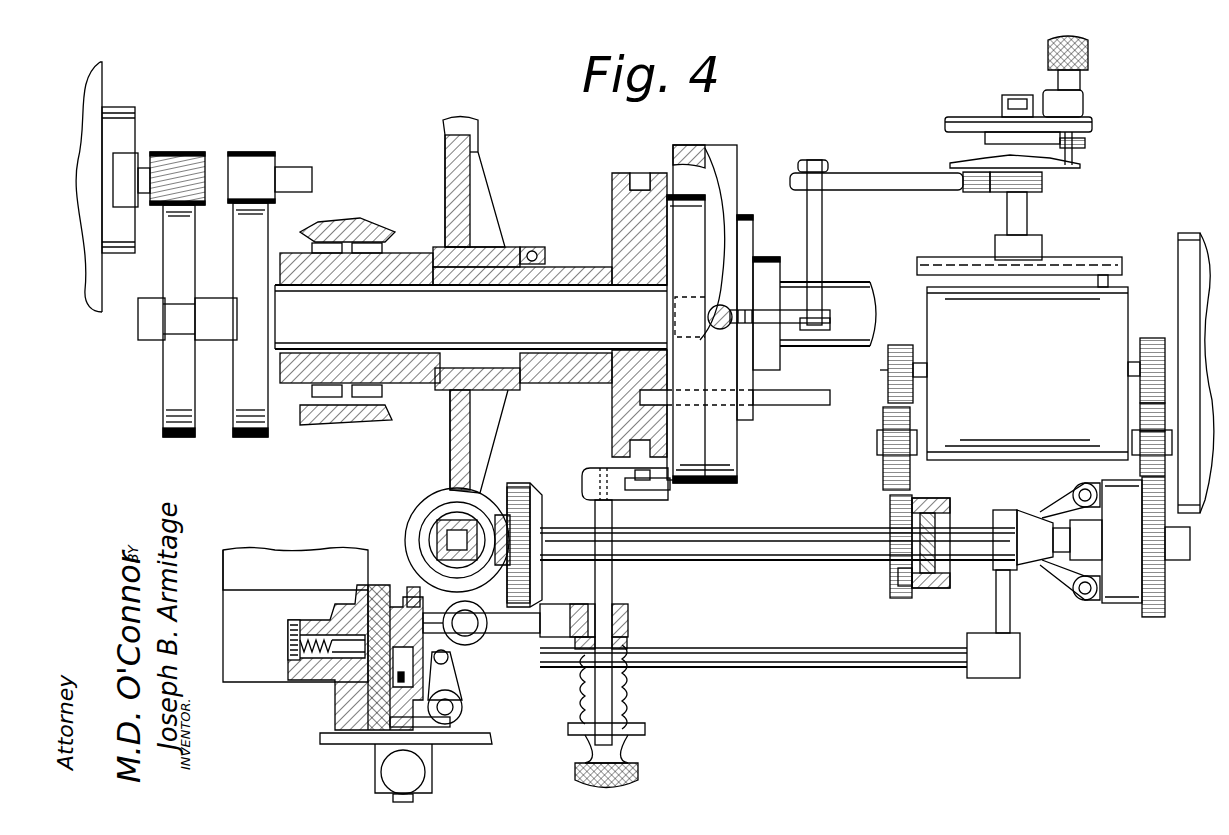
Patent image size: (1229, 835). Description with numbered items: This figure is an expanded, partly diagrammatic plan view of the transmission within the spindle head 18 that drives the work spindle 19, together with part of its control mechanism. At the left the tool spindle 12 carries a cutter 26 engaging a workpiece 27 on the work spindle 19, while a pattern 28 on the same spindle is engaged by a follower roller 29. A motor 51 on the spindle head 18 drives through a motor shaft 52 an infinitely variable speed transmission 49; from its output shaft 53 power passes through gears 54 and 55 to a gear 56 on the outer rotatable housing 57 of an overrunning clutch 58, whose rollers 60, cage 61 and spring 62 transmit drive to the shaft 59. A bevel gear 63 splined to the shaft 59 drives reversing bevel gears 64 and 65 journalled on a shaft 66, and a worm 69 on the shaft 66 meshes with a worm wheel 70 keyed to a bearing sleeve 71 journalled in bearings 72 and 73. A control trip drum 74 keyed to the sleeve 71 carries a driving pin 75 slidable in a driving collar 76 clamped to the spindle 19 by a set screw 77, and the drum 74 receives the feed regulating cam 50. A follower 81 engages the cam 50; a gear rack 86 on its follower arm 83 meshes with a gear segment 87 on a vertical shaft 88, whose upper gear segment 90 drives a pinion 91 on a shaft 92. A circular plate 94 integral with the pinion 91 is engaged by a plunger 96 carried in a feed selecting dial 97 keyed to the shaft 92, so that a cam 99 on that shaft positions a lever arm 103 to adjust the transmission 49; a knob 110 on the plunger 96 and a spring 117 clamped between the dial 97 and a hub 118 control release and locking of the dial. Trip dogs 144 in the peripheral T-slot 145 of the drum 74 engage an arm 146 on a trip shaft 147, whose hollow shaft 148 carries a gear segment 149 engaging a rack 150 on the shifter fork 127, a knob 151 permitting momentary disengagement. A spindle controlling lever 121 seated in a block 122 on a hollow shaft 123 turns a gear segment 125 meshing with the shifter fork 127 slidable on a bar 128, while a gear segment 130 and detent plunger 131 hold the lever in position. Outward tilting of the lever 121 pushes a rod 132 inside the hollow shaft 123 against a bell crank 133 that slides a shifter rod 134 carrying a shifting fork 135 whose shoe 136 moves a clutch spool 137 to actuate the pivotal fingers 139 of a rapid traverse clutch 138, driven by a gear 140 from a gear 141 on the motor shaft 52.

The tool spindle 12 is at (135, 108).
The cutter 26 is at (178, 152).
The workpiece 27 is at (163, 384).
The pattern 28 is at (245, 386).
The follower roller 29 is at (252, 152).
The work spindle 19 is at (555, 296).
The bearing 72 is at (310, 243).
The bearing 73 is at (535, 248).
The bearing sleeve 71 is at (428, 378).
The worm wheel 70 is at (450, 430).
The spindle head 18 is at (305, 422).
The control trip drum 74 is at (612, 198).
The slot 145 is at (640, 173).
The feed regulating cam 50 is at (685, 228).
The follower 81 is at (728, 170).
The set screw 77 is at (755, 258).
The driving collar 76 is at (780, 370).
The driving pin 75 is at (805, 397).
The gear rack 86 is at (718, 305).
The gear segment 87 is at (760, 351).
The follower arm 83 is at (725, 330).
The vertical shaft 88 is at (824, 242).
The gear segment 90 is at (975, 190).
The pinion 91 is at (1005, 192).
The shaft 92 is at (1027, 214).
The cam 99 is at (1092, 255).
The feed selecting dial 97 is at (965, 117).
The knob 110 is at (1088, 58).
The hub 118 is at (990, 140).
The spring 117 is at (1085, 140).
The plunger 96 is at (1072, 152).
The circular plate 94 is at (955, 164).
The infinitely variable speed transmission 49 is at (1128, 298).
The lever arm 103 is at (1098, 285).
The output shaft 53 is at (918, 360).
The gear 54 is at (888, 398).
The gear 55 is at (883, 428).
The motor shaft 52 is at (1134, 360).
The gear 141 is at (1140, 392).
The gear 140 is at (1140, 418).
The motor 51 is at (1200, 233).
The bevel gear 65 is at (422, 508).
The worm 69 is at (447, 508).
The shaft 66 is at (440, 530).
The bevel gear 64 is at (500, 510).
The bevel gear 63 is at (534, 503).
The shaft 59 is at (815, 540).
The arm 146 is at (626, 494).
The trip dog 144 is at (668, 488).
The trip shaft 147 is at (612, 591).
The gear segment 149 is at (558, 604).
The rack 150 is at (548, 648).
The hollow shaft 148 is at (622, 690).
The knob 151 is at (575, 774).
The shifter rod 134 is at (733, 648).
The detent plunger 131 is at (330, 642).
The gear segment 130 is at (340, 672).
The hollow shaft 123 is at (360, 705).
The gear segment 125 is at (410, 590).
The bar 128 is at (470, 623).
The shifter fork 127 is at (470, 645).
The rod 132 is at (408, 678).
The bell crank 133 is at (462, 695).
The block 122 is at (375, 765).
The spindle controlling lever 121 is at (386, 775).
The gear 56 is at (890, 500).
The outer rotatable housing 57 is at (925, 505).
The rollers 60 is at (942, 514).
The spring 62 is at (895, 572).
The cage 61 is at (918, 586).
The overrunning clutch 58 is at (882, 608).
The shoe 136 is at (1000, 570).
The shifting fork 135 is at (1005, 643).
The clutch spool 137 is at (1045, 512).
The pivotal fingers 139 is at (1062, 495).
The rapid traverse clutch 138 is at (1122, 605).